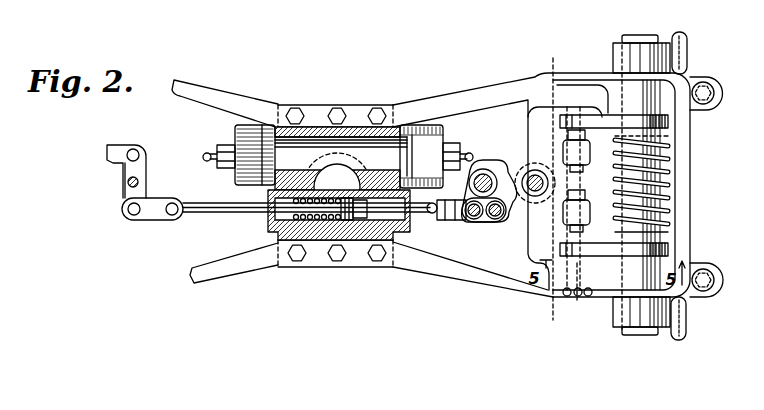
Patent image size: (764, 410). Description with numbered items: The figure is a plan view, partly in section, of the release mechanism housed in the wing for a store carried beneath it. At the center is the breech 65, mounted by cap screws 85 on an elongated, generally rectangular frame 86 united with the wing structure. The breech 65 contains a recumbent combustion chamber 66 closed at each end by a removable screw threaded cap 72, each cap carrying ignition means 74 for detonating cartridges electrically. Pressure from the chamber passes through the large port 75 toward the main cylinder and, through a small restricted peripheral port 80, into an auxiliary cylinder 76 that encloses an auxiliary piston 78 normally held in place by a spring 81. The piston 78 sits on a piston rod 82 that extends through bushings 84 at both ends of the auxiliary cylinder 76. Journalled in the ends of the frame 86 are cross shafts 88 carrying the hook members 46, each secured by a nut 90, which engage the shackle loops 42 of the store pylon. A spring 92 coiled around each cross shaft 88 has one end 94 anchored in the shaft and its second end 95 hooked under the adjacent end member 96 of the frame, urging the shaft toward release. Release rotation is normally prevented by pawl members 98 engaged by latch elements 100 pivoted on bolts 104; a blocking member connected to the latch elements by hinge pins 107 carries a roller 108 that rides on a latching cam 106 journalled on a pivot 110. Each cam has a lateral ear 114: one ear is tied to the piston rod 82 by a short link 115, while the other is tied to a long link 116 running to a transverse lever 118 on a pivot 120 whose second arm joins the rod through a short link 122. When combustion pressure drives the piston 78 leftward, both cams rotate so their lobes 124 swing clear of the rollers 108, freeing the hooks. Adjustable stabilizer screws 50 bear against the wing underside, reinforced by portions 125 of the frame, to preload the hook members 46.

The shackle loop 42 is at (688, 37).
The hook member 46 is at (618, 60).
The adjustable stabilizer screw 50 is at (721, 91).
The breech 65 is at (357, 117).
The combustion chamber 66 is at (308, 141).
The screw threaded cap 72 is at (237, 130).
The ignition means 74 is at (203, 157).
The large port 75 is at (314, 192).
The auxiliary cylinder 76 is at (361, 225).
The auxiliary piston 78 is at (350, 225).
The small peripheral port 80 is at (337, 160).
The spring 81 is at (323, 225).
The piston rod 82 is at (203, 214).
The bushing 84 is at (403, 229).
The cap screw 85 is at (298, 262).
The frame 86 is at (474, 93).
The cross shaft 88 is at (647, 34).
The nut 90 is at (620, 43).
The spring 92 is at (645, 197).
The spring end 94 is at (617, 141).
The spring second end 95 is at (670, 230).
The end member 96 is at (692, 177).
The pawl member 98 is at (668, 121).
The latch element 100 is at (599, 129).
The bolt 104 is at (550, 306).
The latching cam 106 is at (485, 174).
The hinge pin 107 is at (577, 298).
The roller 108 is at (521, 218).
The pivot 110 is at (500, 172).
The lateral ear 114 is at (523, 228).
The short link 115 is at (495, 220).
The long link 116 is at (112, 164).
The transverse lever 118 is at (125, 197).
The pivot 120 is at (139, 182).
The short link 122 is at (146, 221).
The lobe 124 is at (520, 174).
The reinforcing portion 125 is at (710, 78).